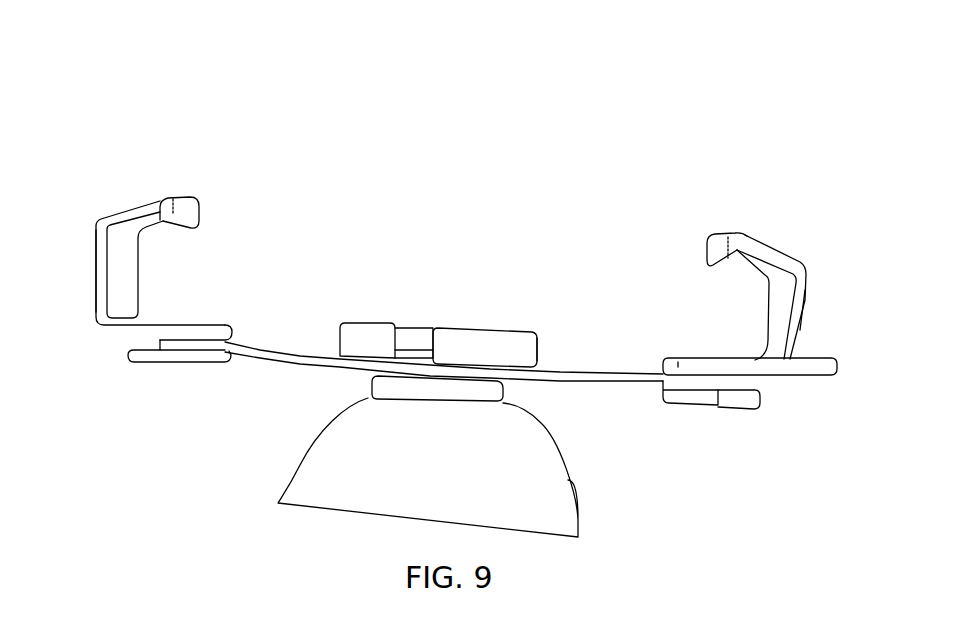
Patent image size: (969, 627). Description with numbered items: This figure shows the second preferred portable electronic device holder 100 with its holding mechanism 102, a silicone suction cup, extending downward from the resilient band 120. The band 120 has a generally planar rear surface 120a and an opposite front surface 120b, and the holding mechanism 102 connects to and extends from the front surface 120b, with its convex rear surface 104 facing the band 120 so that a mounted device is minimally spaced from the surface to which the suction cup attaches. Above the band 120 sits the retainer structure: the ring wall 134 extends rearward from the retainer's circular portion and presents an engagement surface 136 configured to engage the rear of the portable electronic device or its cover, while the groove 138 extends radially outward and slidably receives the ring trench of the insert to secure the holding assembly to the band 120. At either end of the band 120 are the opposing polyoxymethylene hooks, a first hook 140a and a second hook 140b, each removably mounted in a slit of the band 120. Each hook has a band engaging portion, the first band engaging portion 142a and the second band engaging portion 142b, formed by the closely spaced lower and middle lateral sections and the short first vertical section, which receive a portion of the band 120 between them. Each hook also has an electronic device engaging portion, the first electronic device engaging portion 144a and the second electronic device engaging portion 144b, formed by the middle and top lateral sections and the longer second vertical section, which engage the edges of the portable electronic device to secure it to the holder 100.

The portable electronic device holder 100 is at (266, 94).
The holding mechanism 102 is at (290, 493).
The convex rear surface 104 is at (305, 470).
The band 120 is at (444, 369).
The rear surface 120a is at (583, 370).
The front surface 120b is at (587, 383).
The ring wall 134 is at (528, 345).
The engagement surface 136 is at (487, 332).
The groove 138 is at (398, 330).
The first hook 140a is at (131, 230).
The second hook 140b is at (784, 275).
The first band engaging portion 142a is at (113, 355).
The second band engaging portion 142b is at (764, 454).
The first electronic device engaging portion 144a is at (154, 161).
The second electronic device engaging portion 144b is at (727, 211).